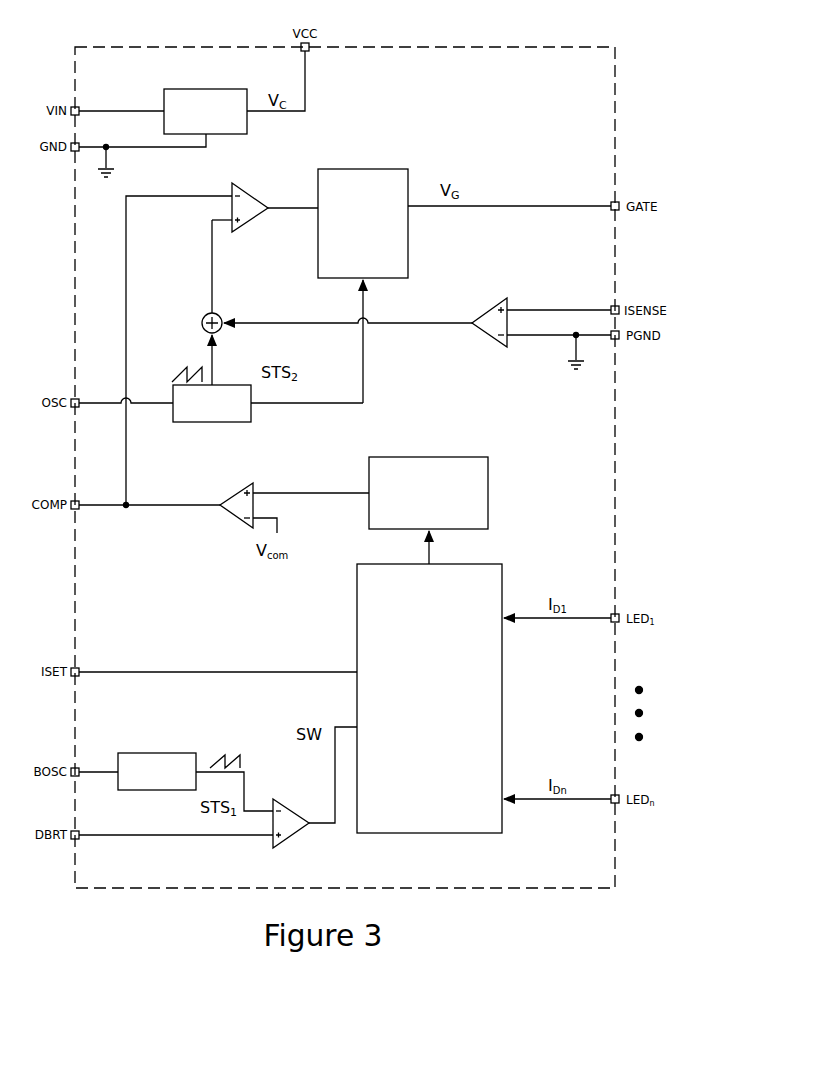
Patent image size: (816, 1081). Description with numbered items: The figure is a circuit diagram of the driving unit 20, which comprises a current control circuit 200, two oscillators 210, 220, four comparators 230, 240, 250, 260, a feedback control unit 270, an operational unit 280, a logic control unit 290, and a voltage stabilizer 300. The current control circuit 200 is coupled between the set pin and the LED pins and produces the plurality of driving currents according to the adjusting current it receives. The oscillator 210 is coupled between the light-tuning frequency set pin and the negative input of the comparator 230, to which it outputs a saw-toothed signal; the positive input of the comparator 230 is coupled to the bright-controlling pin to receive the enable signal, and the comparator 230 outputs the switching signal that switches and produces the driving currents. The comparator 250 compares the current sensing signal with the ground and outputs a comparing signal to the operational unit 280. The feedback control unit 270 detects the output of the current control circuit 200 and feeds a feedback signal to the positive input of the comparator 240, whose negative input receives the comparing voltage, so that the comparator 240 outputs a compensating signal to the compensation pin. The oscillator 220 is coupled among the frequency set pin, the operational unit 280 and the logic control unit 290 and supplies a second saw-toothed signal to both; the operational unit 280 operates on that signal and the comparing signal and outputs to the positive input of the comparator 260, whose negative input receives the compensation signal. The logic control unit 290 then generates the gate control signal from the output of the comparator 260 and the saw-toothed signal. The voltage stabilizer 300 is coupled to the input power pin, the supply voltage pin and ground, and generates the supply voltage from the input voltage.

The driving unit 20 is at (592, 47).
The current control circuit 200 is at (487, 564).
The oscillator 210 is at (160, 753).
The oscillator 220 is at (202, 422).
The comparator 230 is at (275, 799).
The comparator 240 is at (250, 483).
The comparator 250 is at (490, 307).
The comparator 260 is at (248, 192).
The feedback control unit 270 is at (470, 457).
The operational unit 280 is at (204, 316).
The logic control unit 290 is at (397, 169).
The voltage stabilizer 300 is at (213, 89).